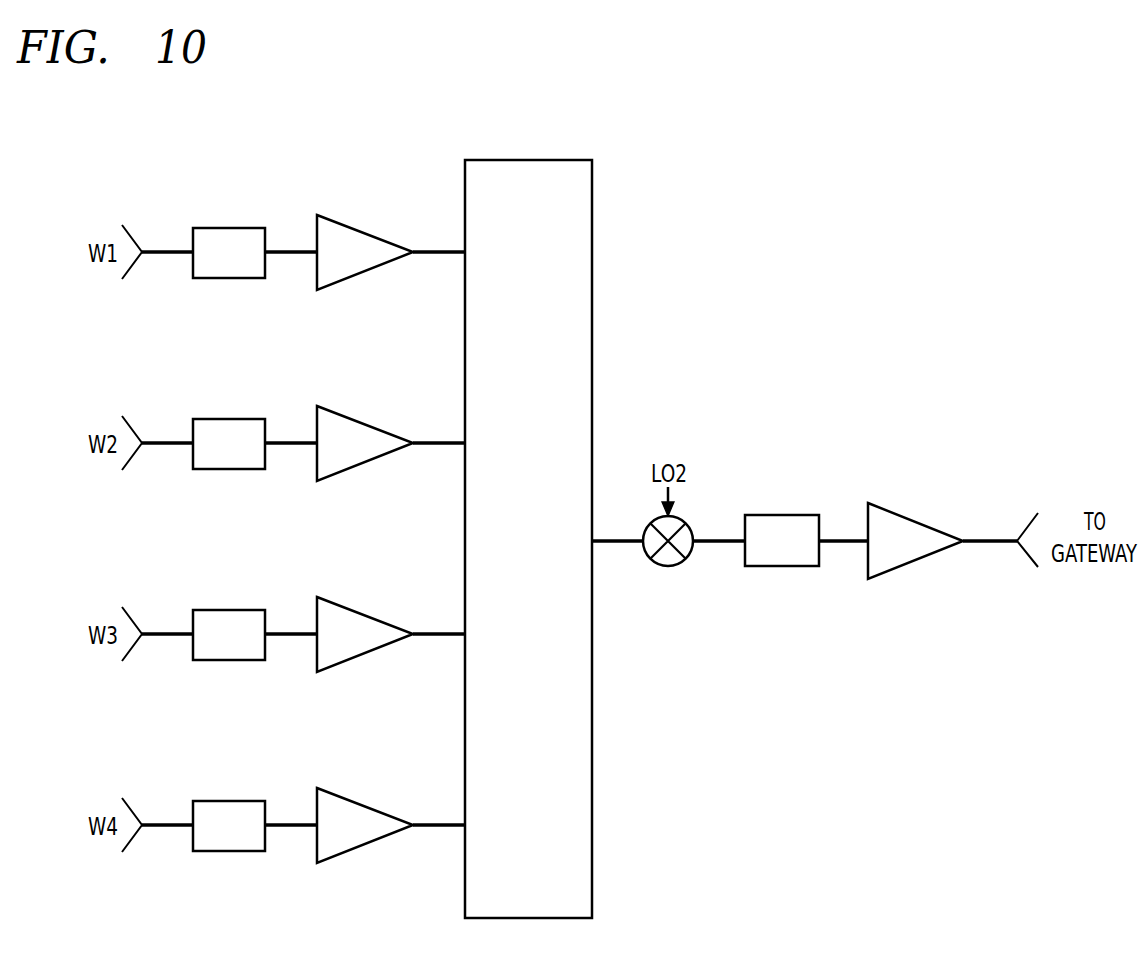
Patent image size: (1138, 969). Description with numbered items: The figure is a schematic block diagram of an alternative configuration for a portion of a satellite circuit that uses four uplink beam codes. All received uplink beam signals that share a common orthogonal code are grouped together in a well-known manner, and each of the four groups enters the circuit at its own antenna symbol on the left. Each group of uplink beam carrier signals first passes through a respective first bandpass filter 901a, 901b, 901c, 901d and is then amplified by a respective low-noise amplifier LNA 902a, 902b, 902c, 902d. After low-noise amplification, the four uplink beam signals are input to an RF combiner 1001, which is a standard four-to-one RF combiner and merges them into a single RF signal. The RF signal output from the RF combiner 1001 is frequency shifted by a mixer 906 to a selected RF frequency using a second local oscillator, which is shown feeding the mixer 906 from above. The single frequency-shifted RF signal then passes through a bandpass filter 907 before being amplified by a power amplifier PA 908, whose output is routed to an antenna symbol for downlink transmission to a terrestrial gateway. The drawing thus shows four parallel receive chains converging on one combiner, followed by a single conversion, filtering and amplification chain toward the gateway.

The first bandpass filter 901a is at (233, 228).
The first bandpass filter 901b is at (233, 419).
The first bandpass filter 901c is at (233, 610).
The first bandpass filter 901d is at (233, 801).
The low-noise amplifier LNA 902a is at (356, 229).
The low-noise amplifier LNA 902b is at (356, 420).
The low-noise amplifier LNA 902c is at (356, 611).
The low-noise amplifier LNA 902d is at (356, 802).
The RF combiner 1001 is at (530, 160).
The mixer 906 is at (668, 566).
The bandpass filter 907 is at (783, 515).
The power amplifier PA 908 is at (907, 518).